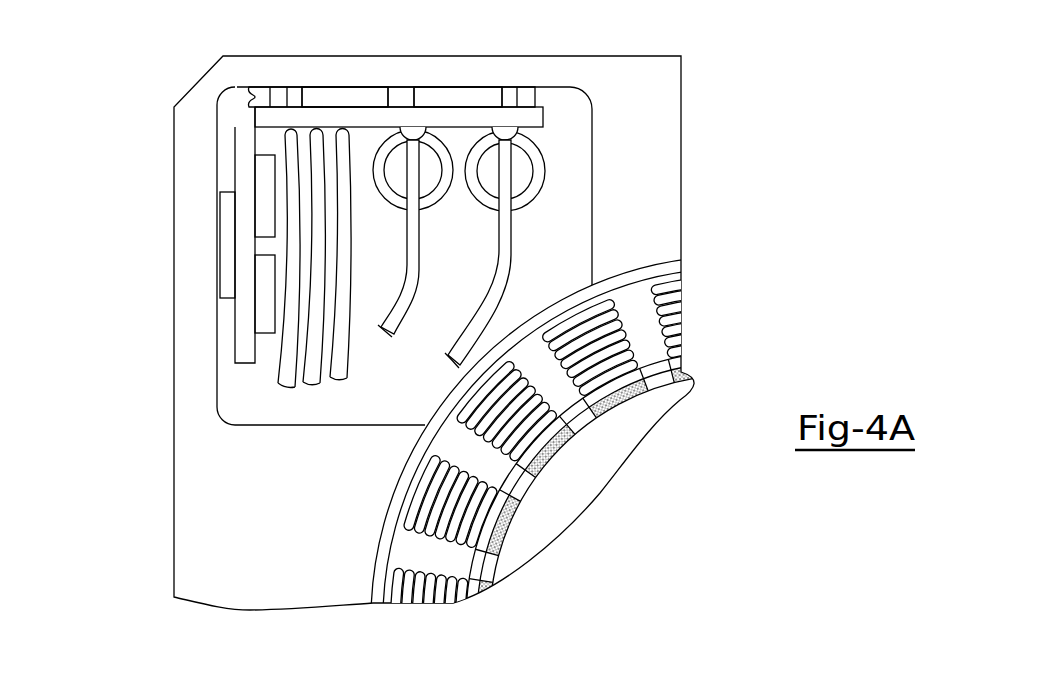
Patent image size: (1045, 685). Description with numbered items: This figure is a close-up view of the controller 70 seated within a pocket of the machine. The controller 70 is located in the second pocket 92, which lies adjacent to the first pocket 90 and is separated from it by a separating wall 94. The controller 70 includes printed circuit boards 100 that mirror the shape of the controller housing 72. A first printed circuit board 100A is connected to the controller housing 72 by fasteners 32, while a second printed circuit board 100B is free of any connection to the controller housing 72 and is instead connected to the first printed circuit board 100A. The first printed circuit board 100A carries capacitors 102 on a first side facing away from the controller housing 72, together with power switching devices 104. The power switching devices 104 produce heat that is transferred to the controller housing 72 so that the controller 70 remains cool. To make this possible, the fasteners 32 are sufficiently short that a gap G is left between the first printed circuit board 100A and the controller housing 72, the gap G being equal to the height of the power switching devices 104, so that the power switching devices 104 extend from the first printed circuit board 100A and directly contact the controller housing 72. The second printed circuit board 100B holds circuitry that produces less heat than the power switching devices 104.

The controller 70 is at (398, 307).
The controller housing 72 is at (653, 78).
The second pocket 92 is at (287, 444).
The fasteners 32 is at (354, 71).
The power switching devices 104 is at (325, 97).
The gap G is at (250, 99).
The printed circuit board 100 is at (427, 258).
The first printed circuit board 100A is at (533, 118).
The second printed circuit board 100B is at (248, 332).
The capacitors 102 is at (437, 173).
The first pocket 90 is at (469, 462).
The separating wall 94 is at (512, 337).